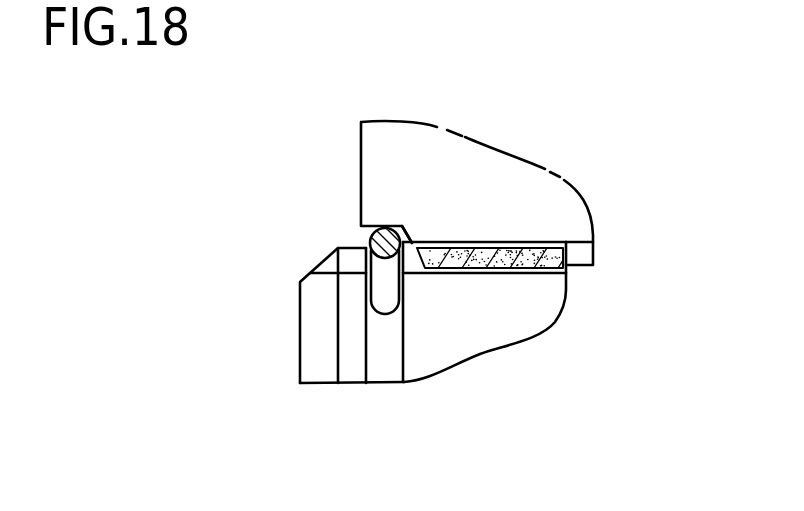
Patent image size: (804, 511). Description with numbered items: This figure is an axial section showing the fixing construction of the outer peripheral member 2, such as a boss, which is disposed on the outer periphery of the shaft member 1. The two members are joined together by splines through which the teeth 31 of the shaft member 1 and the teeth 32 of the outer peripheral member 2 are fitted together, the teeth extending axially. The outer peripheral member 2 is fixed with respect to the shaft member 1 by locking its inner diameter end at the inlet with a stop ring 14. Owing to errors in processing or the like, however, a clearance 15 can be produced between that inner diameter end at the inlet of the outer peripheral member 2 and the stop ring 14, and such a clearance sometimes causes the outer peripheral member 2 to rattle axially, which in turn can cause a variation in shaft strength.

The shaft member 1 is at (537, 345).
The outer peripheral member 2 is at (540, 148).
The stop ring 14 is at (368, 237).
The clearance 15 is at (403, 230).
The teeth 31 is at (573, 268).
The teeth 32 is at (572, 263).